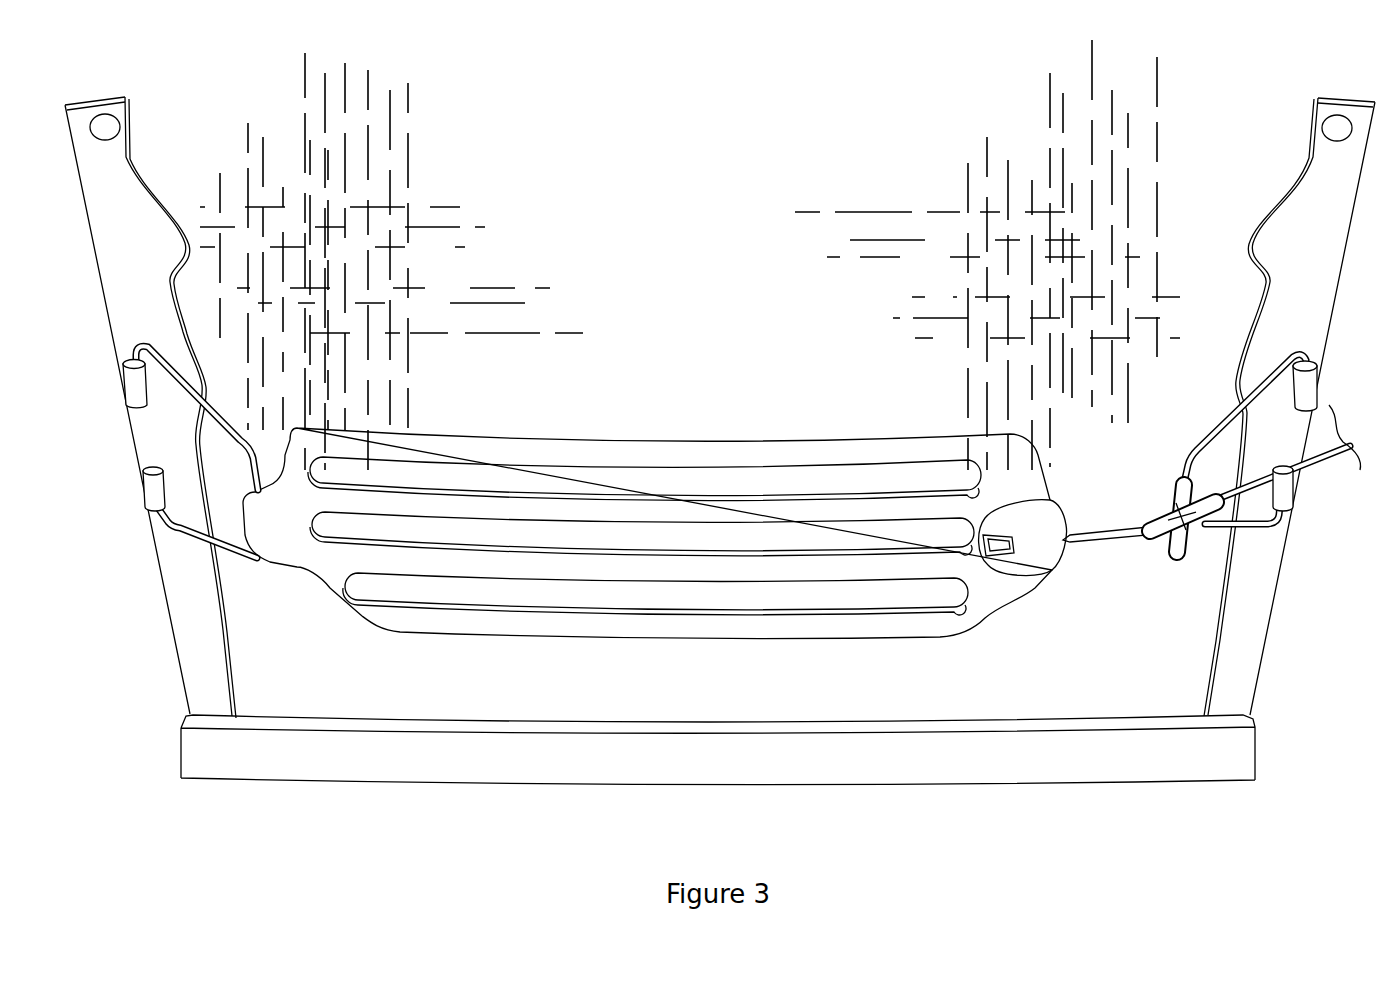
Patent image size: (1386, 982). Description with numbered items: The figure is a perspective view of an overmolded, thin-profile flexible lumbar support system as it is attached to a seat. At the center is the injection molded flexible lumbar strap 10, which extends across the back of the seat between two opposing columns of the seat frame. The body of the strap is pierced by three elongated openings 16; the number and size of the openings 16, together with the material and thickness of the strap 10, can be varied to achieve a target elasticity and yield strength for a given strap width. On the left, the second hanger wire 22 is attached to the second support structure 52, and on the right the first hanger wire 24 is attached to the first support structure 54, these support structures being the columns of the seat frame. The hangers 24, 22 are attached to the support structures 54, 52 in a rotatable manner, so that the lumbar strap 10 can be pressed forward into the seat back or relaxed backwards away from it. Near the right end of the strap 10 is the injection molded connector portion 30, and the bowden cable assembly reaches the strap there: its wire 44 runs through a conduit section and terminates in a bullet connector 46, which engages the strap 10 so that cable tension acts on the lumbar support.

The flexible lumbar strap 10 is at (882, 419).
The elongated openings 16 is at (352, 468).
The second hanger wire 22 is at (238, 573).
The first hanger wire 24 is at (1227, 403).
The connector portion 30 is at (1158, 493).
The wire 44 is at (1100, 551).
The bullet connector 46 is at (1014, 539).
The second support structure 52 is at (152, 180).
The first support structure 54 is at (1205, 673).